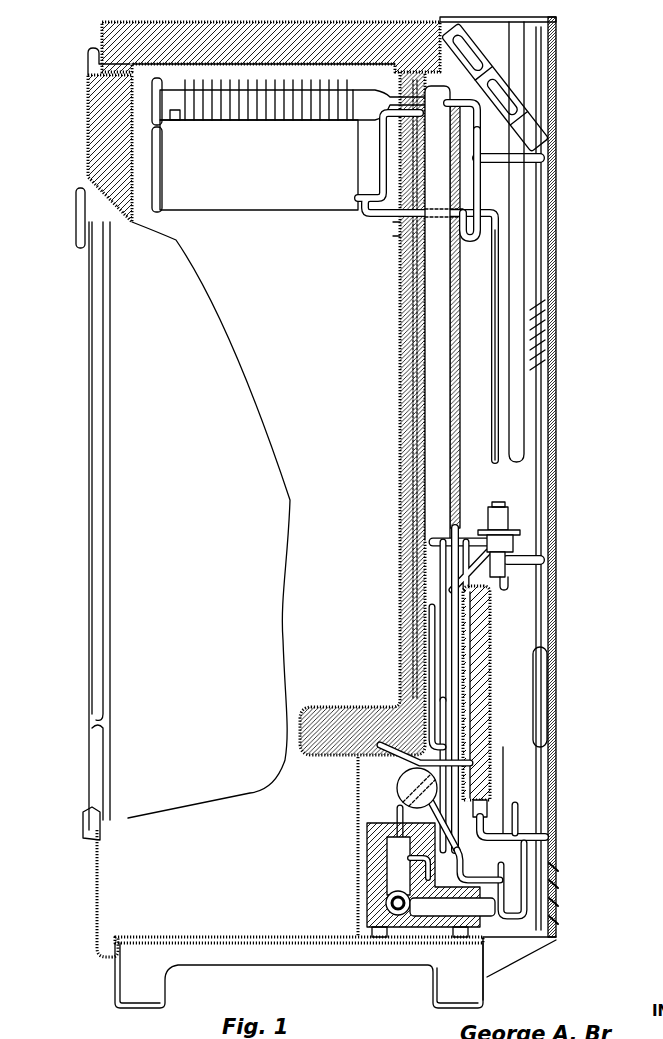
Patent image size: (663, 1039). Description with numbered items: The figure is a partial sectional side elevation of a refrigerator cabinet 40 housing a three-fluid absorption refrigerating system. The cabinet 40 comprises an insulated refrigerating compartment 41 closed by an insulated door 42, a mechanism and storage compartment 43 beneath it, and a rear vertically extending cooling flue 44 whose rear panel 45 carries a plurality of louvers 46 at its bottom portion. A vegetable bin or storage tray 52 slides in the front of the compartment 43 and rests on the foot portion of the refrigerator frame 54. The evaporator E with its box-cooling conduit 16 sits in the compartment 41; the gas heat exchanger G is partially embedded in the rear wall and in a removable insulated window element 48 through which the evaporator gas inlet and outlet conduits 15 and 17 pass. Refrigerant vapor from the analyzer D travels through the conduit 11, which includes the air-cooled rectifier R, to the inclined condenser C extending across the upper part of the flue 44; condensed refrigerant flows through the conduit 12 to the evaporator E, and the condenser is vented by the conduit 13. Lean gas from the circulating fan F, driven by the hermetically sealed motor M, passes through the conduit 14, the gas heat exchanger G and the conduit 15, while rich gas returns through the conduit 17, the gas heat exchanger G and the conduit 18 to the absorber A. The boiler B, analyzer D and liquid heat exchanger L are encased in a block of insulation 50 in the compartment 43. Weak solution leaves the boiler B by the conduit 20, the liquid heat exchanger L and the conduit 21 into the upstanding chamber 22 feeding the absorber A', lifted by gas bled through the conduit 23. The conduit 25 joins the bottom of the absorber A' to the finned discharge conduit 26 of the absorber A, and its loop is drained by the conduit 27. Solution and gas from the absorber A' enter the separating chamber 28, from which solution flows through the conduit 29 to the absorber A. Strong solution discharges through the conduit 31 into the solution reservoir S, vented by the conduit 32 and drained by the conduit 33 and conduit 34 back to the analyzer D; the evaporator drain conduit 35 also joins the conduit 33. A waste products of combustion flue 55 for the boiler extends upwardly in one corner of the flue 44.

The conduit 11 is at (545, 467).
The conduit 12 is at (478, 183).
The conduit 13 is at (460, 100).
The conduit 14 is at (470, 537).
The conduit 15 is at (380, 177).
The box-cooling conduit 16 is at (243, 103).
The conduit 17 is at (385, 92).
The conduit 18 is at (440, 585).
The conduit 20 is at (399, 889).
The conduit 21 is at (505, 920).
The upstanding chamber 22 is at (514, 800).
The gas bleed-off conduit 23 is at (462, 862).
The conduit 25 is at (537, 840).
The finned air-cooled discharge conduit 26 is at (473, 620).
The conduit 27 is at (498, 868).
The separating chamber 28 is at (501, 578).
The conduit 29 is at (503, 600).
The conduit 31 is at (447, 763).
The conduit 32 is at (428, 670).
The conduit 33 is at (457, 830).
The conduit 34 is at (407, 866).
The drain conduit 35 is at (495, 385).
The cabinet 40 is at (130, 507).
The insulated refrigerating compartment 41 is at (263, 253).
The insulated door 42 is at (92, 160).
The mechanism and storage compartment 43 is at (419, 763).
The cooling flue 44 is at (505, 478).
The rear panel 45 is at (557, 428).
The louvers 46 is at (562, 887).
The removable insulated window element 48 is at (397, 226).
The block of insulation 50 is at (420, 882).
The storage tray 52 is at (305, 847).
The refrigerator frame 54 is at (299, 972).
The waste products of combustion flue 55 is at (520, 400).
The absorber vessel A is at (489, 701).
The absorber vessel A' is at (567, 697).
The boiler B is at (387, 903).
The condenser C is at (514, 105).
The analyzer D is at (390, 865).
The evaporator E is at (280, 213).
The circulating fan F is at (507, 542).
The gas heat exchanger G is at (435, 315).
The liquid heat exchanger L is at (437, 913).
The electrical motor M is at (502, 517).
The air-cooled rectifier R is at (547, 338).
The solution reservoir S is at (407, 790).